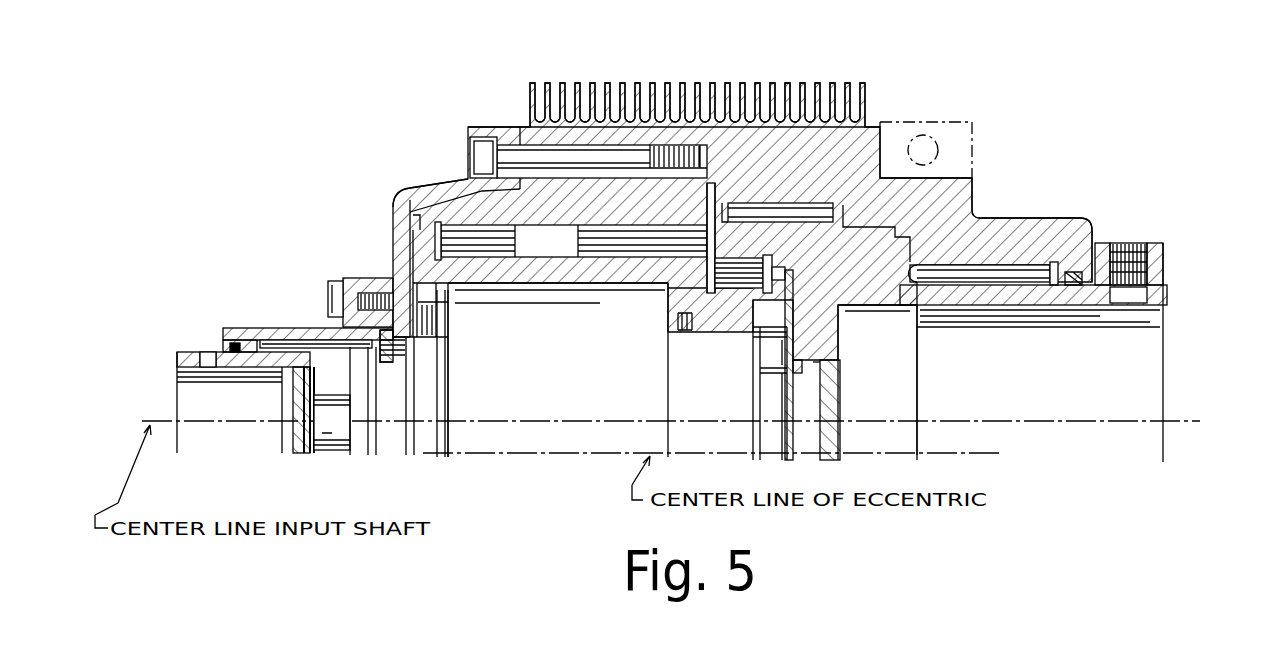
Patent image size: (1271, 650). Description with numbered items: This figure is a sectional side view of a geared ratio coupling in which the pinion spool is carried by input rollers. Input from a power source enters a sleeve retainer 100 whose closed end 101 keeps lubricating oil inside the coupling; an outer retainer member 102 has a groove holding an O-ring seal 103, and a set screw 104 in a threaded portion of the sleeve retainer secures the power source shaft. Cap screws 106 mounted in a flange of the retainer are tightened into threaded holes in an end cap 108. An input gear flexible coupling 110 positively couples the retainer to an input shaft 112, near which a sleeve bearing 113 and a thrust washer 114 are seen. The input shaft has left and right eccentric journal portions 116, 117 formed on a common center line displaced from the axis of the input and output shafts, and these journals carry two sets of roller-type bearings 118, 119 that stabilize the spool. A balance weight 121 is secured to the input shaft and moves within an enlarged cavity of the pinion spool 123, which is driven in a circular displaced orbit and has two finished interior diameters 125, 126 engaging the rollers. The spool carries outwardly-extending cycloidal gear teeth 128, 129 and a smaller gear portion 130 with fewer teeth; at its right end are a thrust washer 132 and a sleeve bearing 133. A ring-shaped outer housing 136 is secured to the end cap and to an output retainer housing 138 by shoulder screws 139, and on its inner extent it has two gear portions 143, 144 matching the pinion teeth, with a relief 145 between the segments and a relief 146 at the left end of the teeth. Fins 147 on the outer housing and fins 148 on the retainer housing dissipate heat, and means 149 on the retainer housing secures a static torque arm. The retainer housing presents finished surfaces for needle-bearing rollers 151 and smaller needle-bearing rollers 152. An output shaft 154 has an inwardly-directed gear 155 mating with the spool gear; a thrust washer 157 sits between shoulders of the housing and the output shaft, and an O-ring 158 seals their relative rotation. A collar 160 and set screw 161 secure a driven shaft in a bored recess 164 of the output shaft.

The sleeve retainer 100 is at (240, 370).
The closed end 101 is at (293, 447).
The outer retainer member 102 is at (242, 328).
The O-ring seal 103 is at (227, 345).
The set screw 104 is at (200, 352).
The cap screws 106 is at (333, 297).
The end cap 108 is at (420, 200).
The input gear flexible coupling 110 is at (320, 340).
The input shaft 112 is at (327, 433).
The sleeve bearing 113 is at (407, 348).
The thrust washer 114 is at (405, 280).
The left eccentric journal portion 116 is at (430, 390).
The right eccentric journal portion 117 is at (770, 402).
The roller-type bearings 118 is at (437, 315).
The roller-type bearings 119 is at (770, 345).
The balance weight 121 is at (562, 410).
The pinion spool 123 is at (433, 238).
The finished interior diameter 125 is at (445, 290).
The finished interior diameter 126 is at (770, 312).
The gear teeth 128 is at (500, 250).
The gear teeth 129 is at (600, 250).
The gear portion 130 is at (760, 288).
The thrust washer 132 is at (790, 305).
The sleeve bearing 133 is at (810, 368).
The outer housing 136 is at (527, 127).
The output retainer housing 138 is at (983, 227).
The shoulder screws 139 is at (480, 152).
The gear portion 143 is at (493, 236).
The gear portion 144 is at (610, 234).
The relief 145 is at (563, 252).
The relief 146 is at (415, 222).
The fins 147 is at (585, 90).
The fins 148 is at (752, 90).
The means for securing a static torque arm 149 is at (890, 122).
The needle-bearing rollers 151 is at (767, 210).
The needle-bearing rollers 152 is at (1032, 268).
The output shaft 154 is at (868, 250).
The inwardly-directed gear 155 is at (743, 263).
The thrust washer 157 is at (915, 273).
The O-ring 158 is at (1073, 283).
The collar 160 is at (1133, 250).
The set screw 161 is at (1167, 260).
The bored recess 164 is at (1080, 408).